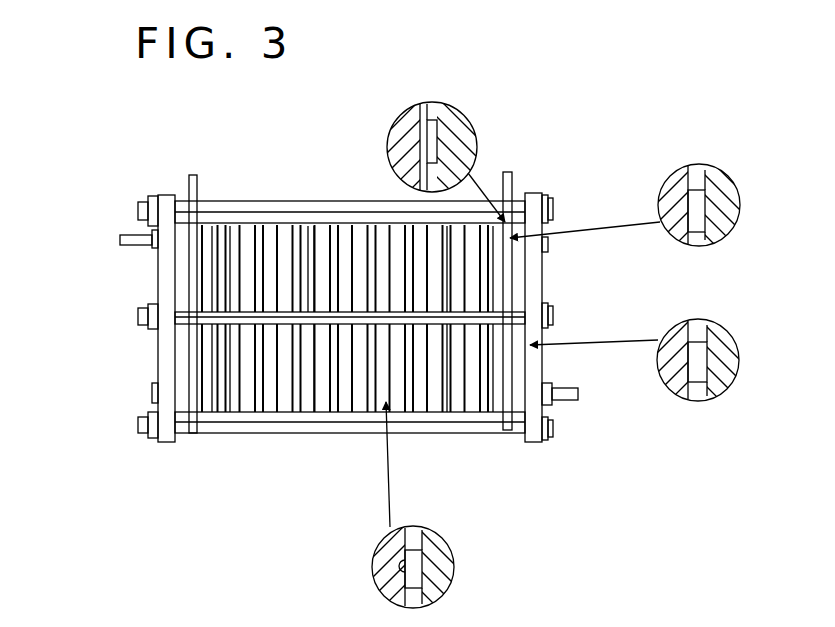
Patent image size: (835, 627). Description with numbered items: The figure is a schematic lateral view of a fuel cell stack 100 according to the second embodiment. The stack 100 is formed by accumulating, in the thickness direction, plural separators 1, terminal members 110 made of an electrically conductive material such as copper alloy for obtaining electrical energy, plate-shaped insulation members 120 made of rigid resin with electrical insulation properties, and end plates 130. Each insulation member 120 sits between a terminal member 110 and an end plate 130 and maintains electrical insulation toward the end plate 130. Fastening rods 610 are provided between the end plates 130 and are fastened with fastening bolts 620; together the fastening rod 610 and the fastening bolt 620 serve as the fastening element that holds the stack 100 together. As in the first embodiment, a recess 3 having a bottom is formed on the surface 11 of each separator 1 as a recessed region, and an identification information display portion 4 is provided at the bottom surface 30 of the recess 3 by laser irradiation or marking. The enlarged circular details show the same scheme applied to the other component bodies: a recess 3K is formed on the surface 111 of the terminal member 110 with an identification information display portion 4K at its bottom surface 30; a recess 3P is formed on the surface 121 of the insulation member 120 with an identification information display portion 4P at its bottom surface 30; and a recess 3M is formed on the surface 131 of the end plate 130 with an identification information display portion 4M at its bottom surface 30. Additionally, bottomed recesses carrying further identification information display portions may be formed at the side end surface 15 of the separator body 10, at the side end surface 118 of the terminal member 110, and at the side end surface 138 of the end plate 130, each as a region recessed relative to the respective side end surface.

The separator 1 is at (228, 404).
The recess 3 is at (395, 550).
The identification information display portion 4 is at (423, 555).
The separator body 10 is at (443, 558).
The surface of the separator 11 is at (212, 392).
The side end surface of the separator body 15 is at (310, 243).
The bottom surface 30 is at (430, 104).
The stack 100 is at (303, 197).
The terminal member 110 is at (196, 192).
The surface of the terminal member 111 is at (407, 113).
The side end surface of the terminal member 118 is at (187, 260).
The insulation member 120 is at (183, 275).
The surface of the insulation member 121 is at (688, 167).
The end plate 130 is at (157, 362).
The surface of the end plate 131 is at (688, 326).
The side end surface of the end plate 138 is at (157, 343).
The fastening rod 610 is at (265, 203).
The fastening bolt 620 is at (141, 205).
The recess 3K is at (420, 142).
The identification information display portion 4K is at (440, 152).
The recess 3P is at (687, 213).
The identification information display portion 4P is at (712, 218).
The recess 3M is at (670, 393).
The identification information display portion 4M is at (707, 357).